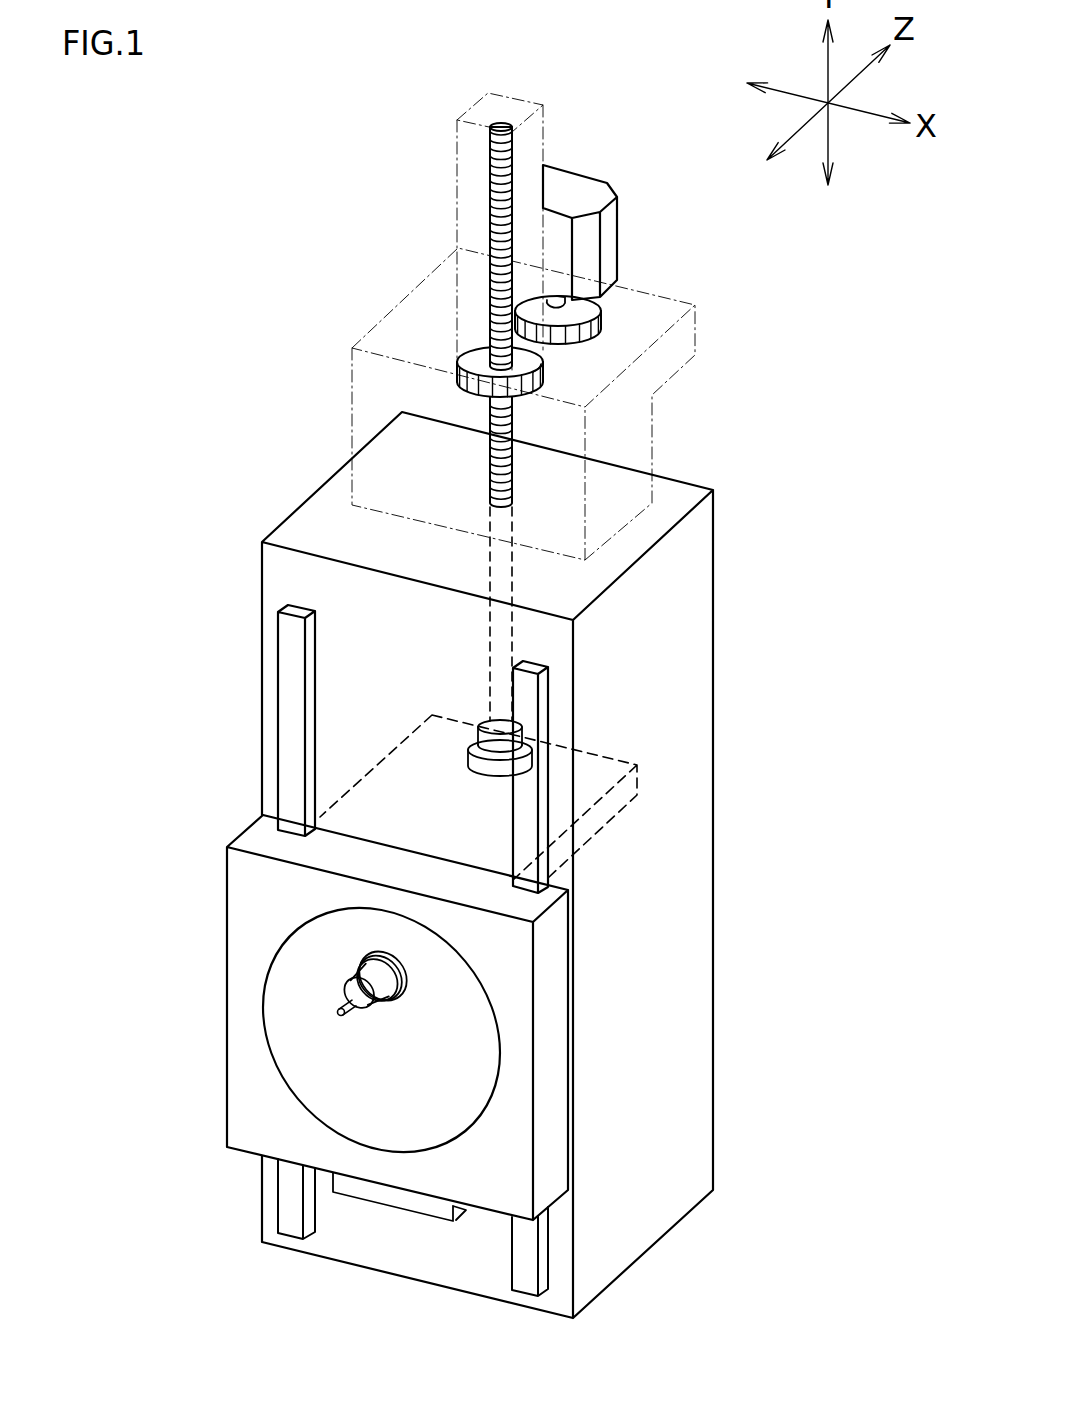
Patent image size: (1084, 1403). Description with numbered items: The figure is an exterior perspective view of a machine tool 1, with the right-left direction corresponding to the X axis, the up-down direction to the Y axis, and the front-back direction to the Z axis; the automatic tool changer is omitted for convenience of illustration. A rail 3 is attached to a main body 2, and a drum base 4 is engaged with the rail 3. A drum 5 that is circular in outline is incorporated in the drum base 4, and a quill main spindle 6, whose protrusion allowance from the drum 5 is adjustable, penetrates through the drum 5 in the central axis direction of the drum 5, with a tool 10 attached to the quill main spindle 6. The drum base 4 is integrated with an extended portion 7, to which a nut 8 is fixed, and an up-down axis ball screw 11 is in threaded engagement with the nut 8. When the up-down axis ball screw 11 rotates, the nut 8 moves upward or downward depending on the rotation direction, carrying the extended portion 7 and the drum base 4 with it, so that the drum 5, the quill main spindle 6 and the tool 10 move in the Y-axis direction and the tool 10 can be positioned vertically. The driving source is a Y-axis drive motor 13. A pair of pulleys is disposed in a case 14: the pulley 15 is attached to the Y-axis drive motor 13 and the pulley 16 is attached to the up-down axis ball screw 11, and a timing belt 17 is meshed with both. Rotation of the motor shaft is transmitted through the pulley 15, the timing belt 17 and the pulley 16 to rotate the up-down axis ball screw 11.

The machine tool 1 is at (183, 377).
The main body 2 is at (690, 632).
The rail 3 is at (278, 647).
The drum base 4 is at (225, 1105).
The drum 5 is at (310, 1045).
The quill main spindle 6 is at (383, 953).
The extended portion 7 is at (390, 810).
The nut 8 is at (475, 745).
The tool 10 is at (343, 985).
The up-down axis ball screw 11 is at (490, 637).
The Y-axis drive motor 13 is at (618, 225).
The case 14 is at (350, 399).
The pulley 15 is at (600, 323).
The pulley 16 is at (540, 388).
The timing belt 17 is at (547, 389).